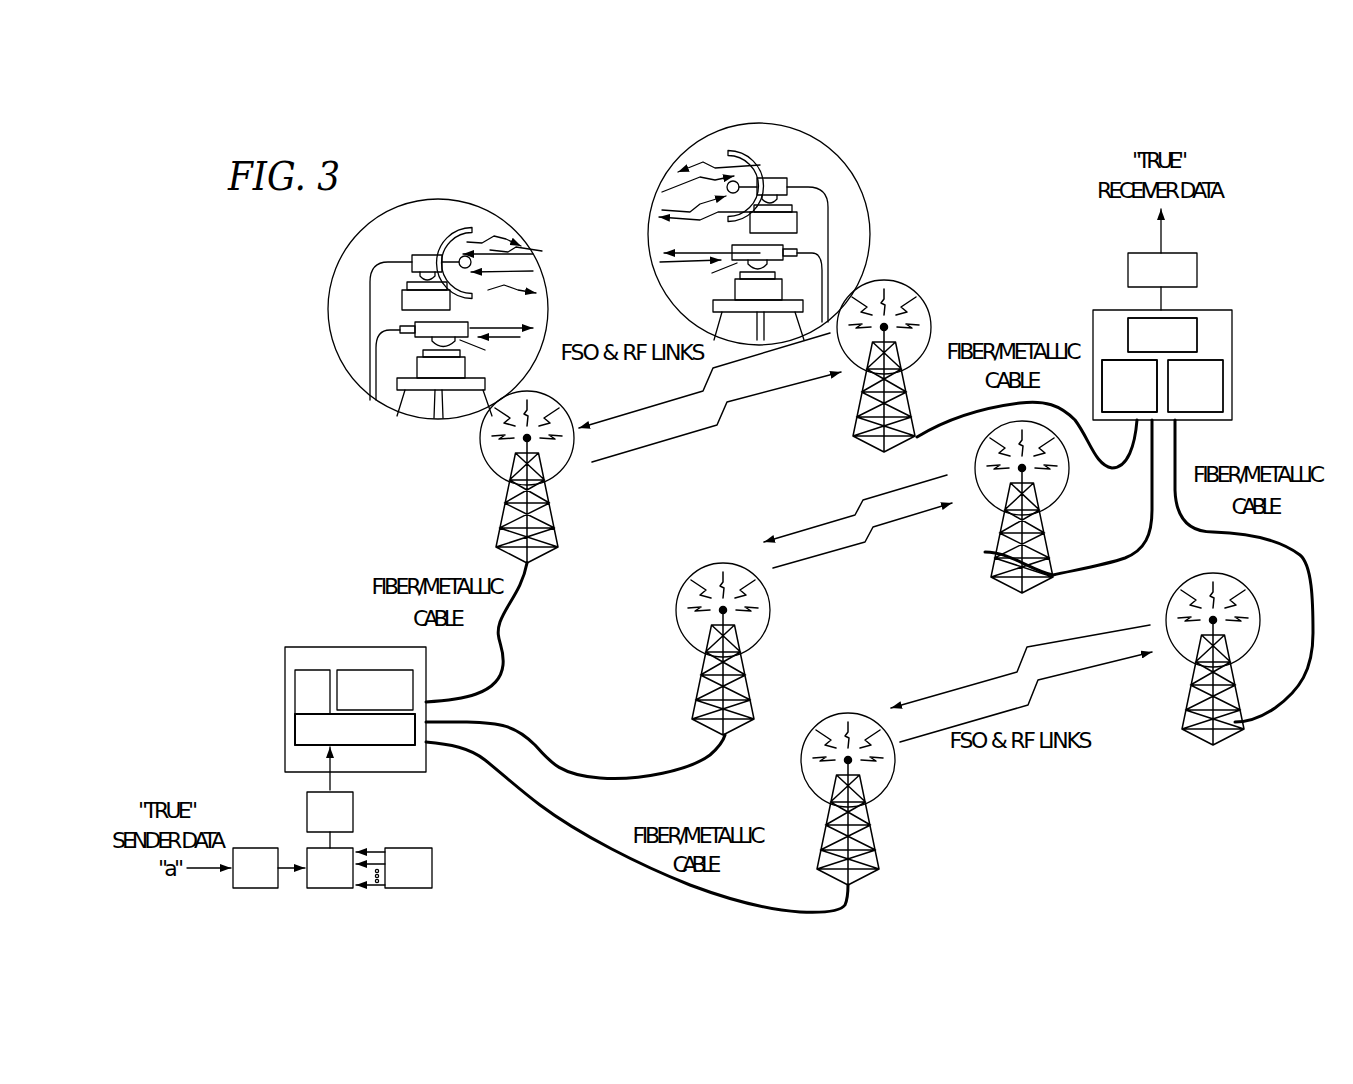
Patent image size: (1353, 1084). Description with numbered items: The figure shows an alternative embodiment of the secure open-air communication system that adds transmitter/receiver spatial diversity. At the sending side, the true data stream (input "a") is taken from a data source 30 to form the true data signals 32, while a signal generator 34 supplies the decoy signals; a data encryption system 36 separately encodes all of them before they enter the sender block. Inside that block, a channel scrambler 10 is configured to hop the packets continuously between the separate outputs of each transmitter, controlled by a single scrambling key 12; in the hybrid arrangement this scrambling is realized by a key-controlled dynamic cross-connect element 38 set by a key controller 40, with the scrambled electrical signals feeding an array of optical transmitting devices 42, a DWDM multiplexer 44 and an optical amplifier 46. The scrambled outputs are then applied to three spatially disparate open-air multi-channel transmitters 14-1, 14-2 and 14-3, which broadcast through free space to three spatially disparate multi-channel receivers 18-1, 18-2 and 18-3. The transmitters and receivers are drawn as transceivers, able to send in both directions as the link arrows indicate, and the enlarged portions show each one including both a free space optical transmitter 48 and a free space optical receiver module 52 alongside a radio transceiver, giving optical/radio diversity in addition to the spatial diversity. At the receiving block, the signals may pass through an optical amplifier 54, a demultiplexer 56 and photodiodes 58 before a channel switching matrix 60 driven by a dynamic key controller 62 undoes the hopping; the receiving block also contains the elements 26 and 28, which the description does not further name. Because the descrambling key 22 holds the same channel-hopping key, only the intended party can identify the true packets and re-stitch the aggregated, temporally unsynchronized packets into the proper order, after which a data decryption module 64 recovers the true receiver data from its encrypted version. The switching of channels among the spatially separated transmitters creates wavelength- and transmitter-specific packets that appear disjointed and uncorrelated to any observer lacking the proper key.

The channel scrambler 10 is at (375, 690).
The scrambling key generator 12 is at (313, 667).
The descrambling key 22 is at (1199, 337).
The receiver processor 26 is at (1195, 386).
The receiver memory 28 is at (1195, 386).
The data source 30 is at (255, 868).
The true data signals 32 is at (330, 868).
The signal generator 34 is at (408, 868).
The data encryption system 36 is at (330, 812).
The key-controlled dynamic cross-connect element 38 is at (355, 730).
The key controller 40 is at (355, 707).
The array of optical transmitting devices 42 is at (355, 730).
The DWDM multiplexer 44 is at (355, 730).
The optical amplifier 46 is at (355, 730).
The free space optical transmitter 48 is at (773, 222).
The free space optical receiver module 52 is at (758, 289).
The optical amplifier 54 is at (1129, 386).
The demultiplexer 56 is at (1129, 386).
The photodiodes 58 is at (1129, 386).
The channel switching matrix 60 is at (1162, 335).
The dynamic key controller 62 is at (1162, 335).
The data decryption module 64 is at (1162, 270).
The spatially disparate transmitter 14-1 is at (558, 503).
The spatially disparate transmitter 14-2 is at (748, 672).
The spatially disparate transmitter 14-3 is at (870, 816).
The spatially disparate receiver 18-1 is at (856, 432).
The spatially disparate receiver 18-2 is at (985, 552).
The spatially disparate receiver 18-3 is at (1187, 685).